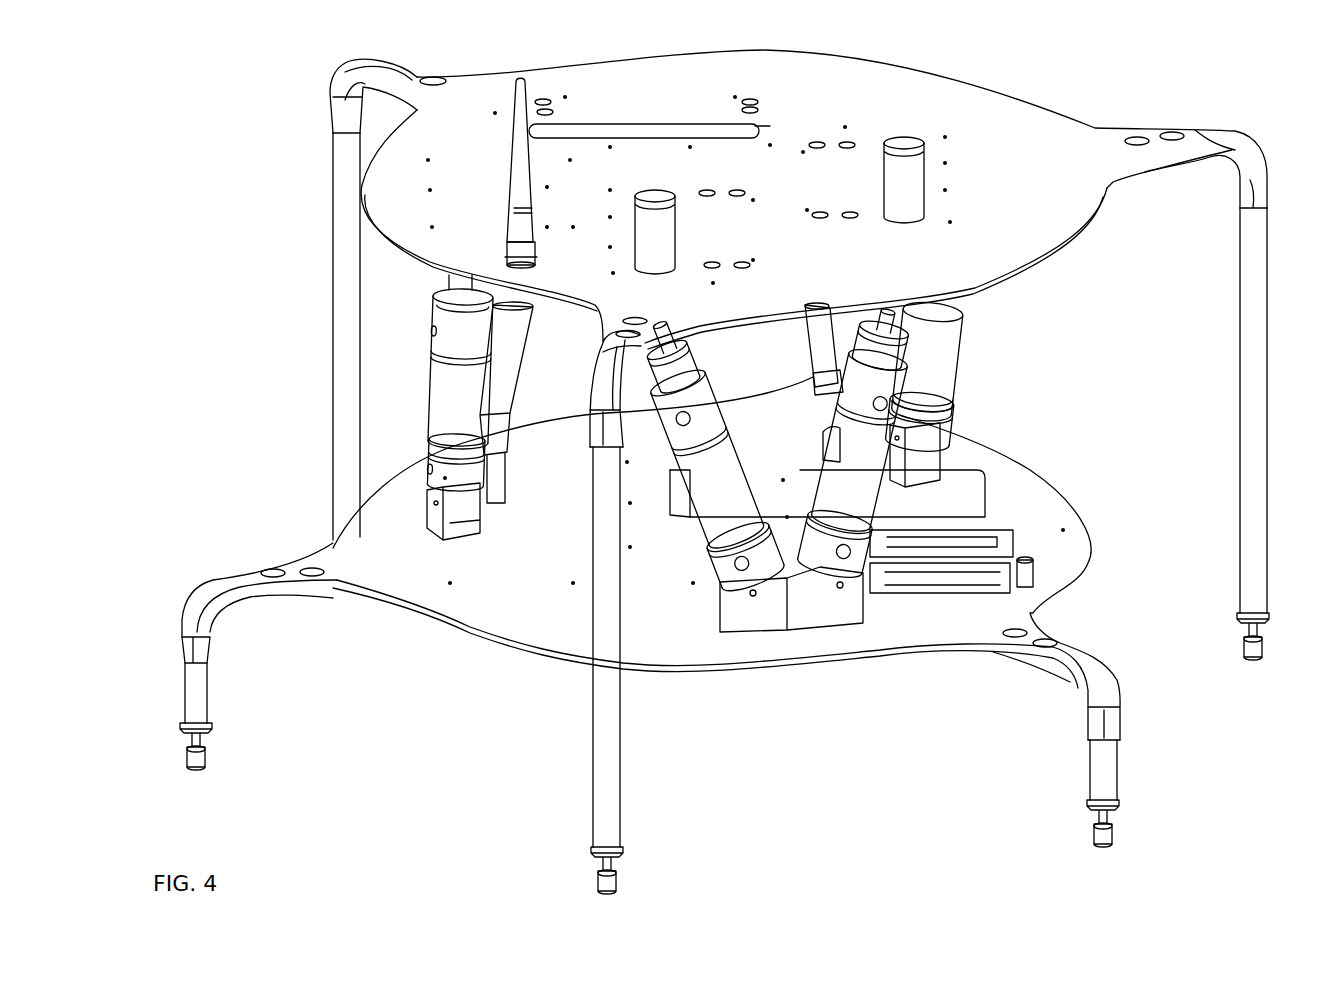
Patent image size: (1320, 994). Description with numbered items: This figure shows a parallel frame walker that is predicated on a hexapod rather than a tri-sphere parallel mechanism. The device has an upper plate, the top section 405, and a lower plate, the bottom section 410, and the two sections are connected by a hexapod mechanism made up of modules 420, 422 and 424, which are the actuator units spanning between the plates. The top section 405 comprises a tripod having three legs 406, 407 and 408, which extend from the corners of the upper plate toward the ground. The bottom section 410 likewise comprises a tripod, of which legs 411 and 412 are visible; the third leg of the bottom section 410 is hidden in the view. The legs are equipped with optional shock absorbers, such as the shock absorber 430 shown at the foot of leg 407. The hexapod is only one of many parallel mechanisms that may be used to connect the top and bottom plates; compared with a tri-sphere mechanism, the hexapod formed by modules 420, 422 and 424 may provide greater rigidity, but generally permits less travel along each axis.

The top section 405 is at (862, 110).
The bottom section 410 is at (530, 601).
The leg 406 is at (1230, 330).
The leg 407 is at (633, 790).
The leg 408 is at (318, 330).
The leg 411 is at (222, 698).
The leg 412 is at (1128, 772).
The module 420 is at (770, 637).
The module 422 is at (515, 450).
The module 424 is at (963, 360).
The shock absorber 430 is at (586, 870).